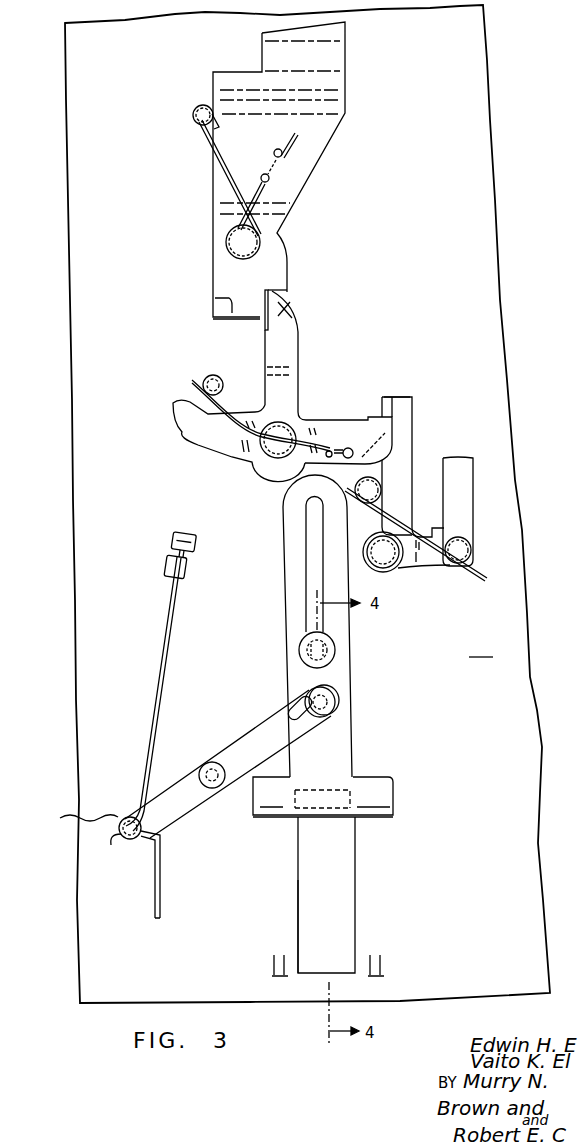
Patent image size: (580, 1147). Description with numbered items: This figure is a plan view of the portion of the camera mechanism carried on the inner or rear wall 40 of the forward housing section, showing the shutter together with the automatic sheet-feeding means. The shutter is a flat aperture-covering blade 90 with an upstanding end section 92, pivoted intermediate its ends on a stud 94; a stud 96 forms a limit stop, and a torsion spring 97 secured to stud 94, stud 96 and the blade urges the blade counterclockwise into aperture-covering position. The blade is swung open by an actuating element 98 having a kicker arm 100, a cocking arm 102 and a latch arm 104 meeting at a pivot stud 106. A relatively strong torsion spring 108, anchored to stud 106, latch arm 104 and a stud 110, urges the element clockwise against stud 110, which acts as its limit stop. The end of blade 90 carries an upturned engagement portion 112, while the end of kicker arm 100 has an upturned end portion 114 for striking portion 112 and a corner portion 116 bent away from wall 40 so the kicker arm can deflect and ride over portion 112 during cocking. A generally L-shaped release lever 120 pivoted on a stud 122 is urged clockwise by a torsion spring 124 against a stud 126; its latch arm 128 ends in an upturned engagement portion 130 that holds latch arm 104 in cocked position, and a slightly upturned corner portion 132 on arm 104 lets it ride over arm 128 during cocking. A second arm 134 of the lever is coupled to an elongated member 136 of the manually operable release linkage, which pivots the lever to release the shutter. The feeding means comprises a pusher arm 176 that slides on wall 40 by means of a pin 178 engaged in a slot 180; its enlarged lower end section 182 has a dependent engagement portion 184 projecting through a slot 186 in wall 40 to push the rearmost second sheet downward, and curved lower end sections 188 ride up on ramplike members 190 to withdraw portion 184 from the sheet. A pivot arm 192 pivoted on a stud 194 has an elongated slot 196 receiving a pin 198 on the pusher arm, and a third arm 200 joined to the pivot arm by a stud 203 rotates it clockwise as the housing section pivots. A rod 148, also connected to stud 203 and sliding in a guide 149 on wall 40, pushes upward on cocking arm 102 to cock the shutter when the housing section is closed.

The rear wall 40 is at (481, 648).
The aperture-covering blade 90 is at (336, 152).
The upstanding end section 92 is at (345, 30).
The stud 94 is at (262, 238).
The stud 96 is at (194, 109).
The torsion spring 97 is at (232, 183).
The actuating element 98 is at (266, 406).
The kicker arm 100 is at (299, 334).
The cocking arm 102 is at (192, 447).
The latch arm 104 is at (348, 420).
The stud 106 is at (277, 456).
The torsion spring 108 is at (178, 410).
The stud 110 is at (208, 375).
The upturned engagement portion 112 is at (214, 301).
The upturned end portion 114 is at (265, 293).
The corner portion 116 is at (300, 300).
The release lever 120 is at (418, 426).
The stud 122 is at (397, 570).
The torsion spring 124 is at (437, 528).
The stud 126 is at (473, 472).
The latch arm 128 is at (412, 400).
The upturned engagement portion 130 is at (386, 398).
The corner portion 132 is at (410, 457).
The second arm 134 is at (440, 568).
The elongated member 136 is at (471, 496).
The rod 148 is at (168, 613).
The guide 149 is at (168, 556).
The pusher arm 176 is at (360, 673).
The pin 178 is at (336, 648).
The slot 180 is at (309, 538).
The enlarged lower end section 182 is at (382, 768).
The dependent engagement portion 184 is at (327, 838).
The slot 186 is at (298, 892).
The curved lower end sections 188 is at (275, 820).
The ramplike members 190 is at (272, 966).
The pivot arm 192 is at (255, 740).
The stud 194 is at (208, 766).
The elongated slot 196 is at (296, 700).
The pin 198 is at (334, 712).
The third arm 200 is at (161, 885).
The stud 203 is at (118, 823).